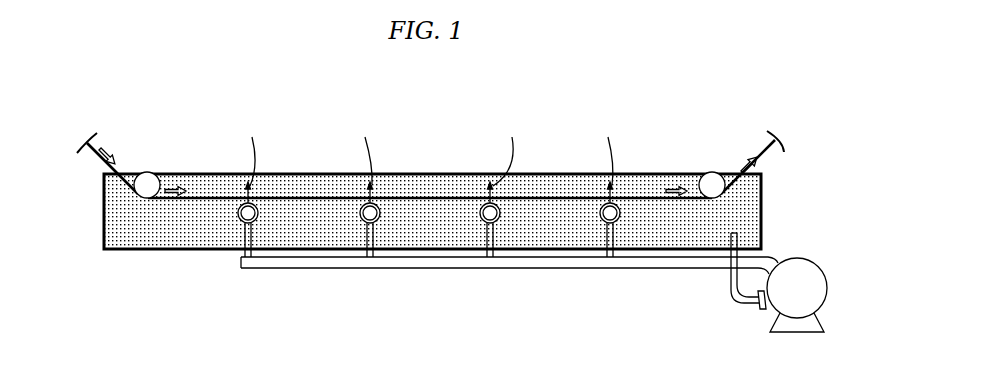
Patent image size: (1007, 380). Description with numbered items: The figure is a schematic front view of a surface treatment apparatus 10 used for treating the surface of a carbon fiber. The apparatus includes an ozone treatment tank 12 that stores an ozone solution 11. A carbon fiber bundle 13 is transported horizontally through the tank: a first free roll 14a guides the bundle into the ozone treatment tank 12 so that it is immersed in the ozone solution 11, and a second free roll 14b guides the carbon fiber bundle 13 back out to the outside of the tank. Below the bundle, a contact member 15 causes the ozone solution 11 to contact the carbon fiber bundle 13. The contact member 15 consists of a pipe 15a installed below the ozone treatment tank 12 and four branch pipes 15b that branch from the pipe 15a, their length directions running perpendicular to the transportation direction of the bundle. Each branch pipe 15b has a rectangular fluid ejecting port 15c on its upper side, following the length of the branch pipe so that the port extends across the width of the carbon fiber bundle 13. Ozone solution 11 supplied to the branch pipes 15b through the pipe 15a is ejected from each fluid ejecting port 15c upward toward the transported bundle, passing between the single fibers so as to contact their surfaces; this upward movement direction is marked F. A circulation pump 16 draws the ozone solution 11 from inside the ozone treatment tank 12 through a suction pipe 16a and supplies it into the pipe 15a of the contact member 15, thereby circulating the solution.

The surface treatment apparatus 10 is at (479, 152).
The ozone solution 11 is at (120, 215).
The ozone treatment tank 12 is at (170, 251).
The carbon fiber bundle 13 is at (118, 167).
The first free roll 14a is at (157, 176).
The second free roll 14b is at (711, 173).
The contact member 15 is at (488, 228).
The pipe 15a is at (428, 270).
The branch pipe 15b is at (238, 214).
The fluid ejecting port 15c is at (246, 197).
The circulation pump 16 is at (765, 264).
The suction pipe 16a is at (728, 283).